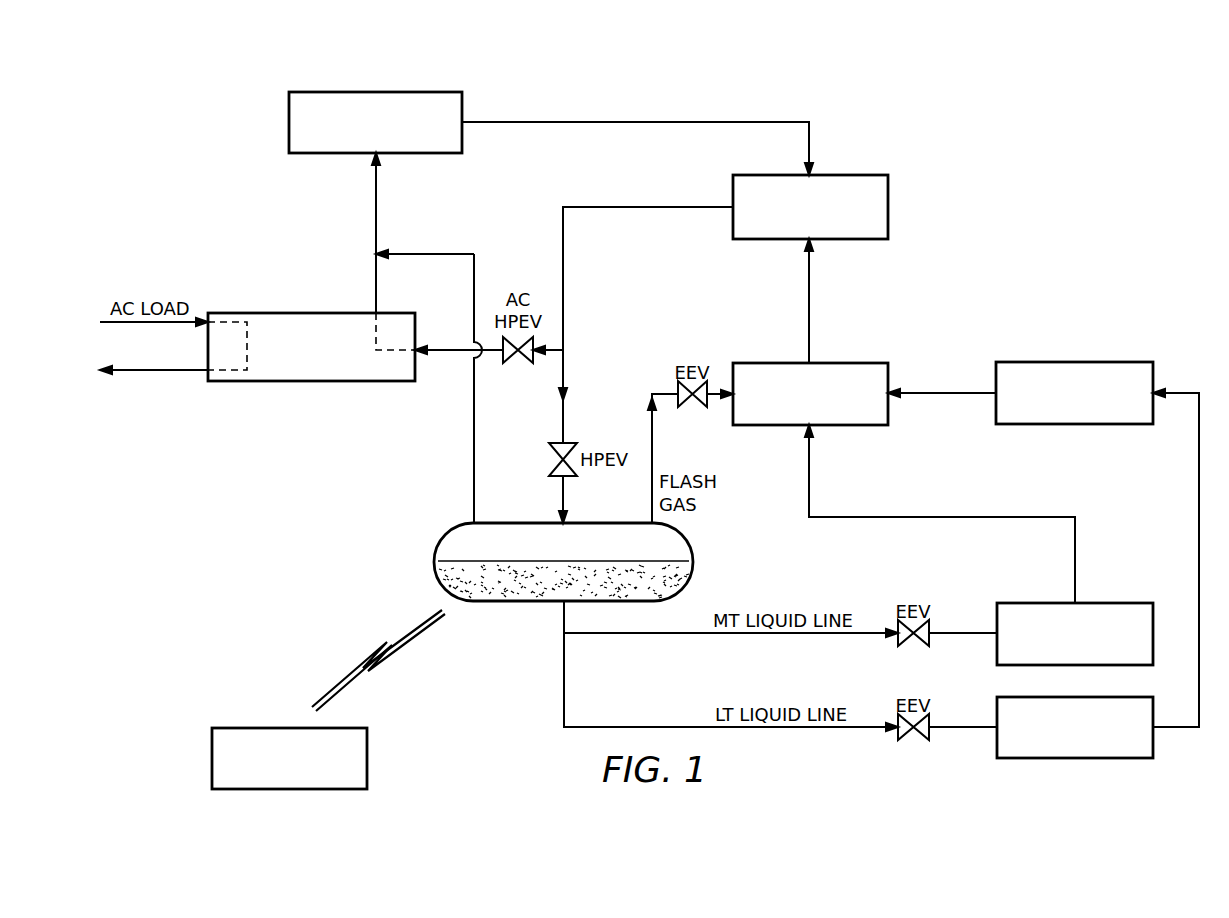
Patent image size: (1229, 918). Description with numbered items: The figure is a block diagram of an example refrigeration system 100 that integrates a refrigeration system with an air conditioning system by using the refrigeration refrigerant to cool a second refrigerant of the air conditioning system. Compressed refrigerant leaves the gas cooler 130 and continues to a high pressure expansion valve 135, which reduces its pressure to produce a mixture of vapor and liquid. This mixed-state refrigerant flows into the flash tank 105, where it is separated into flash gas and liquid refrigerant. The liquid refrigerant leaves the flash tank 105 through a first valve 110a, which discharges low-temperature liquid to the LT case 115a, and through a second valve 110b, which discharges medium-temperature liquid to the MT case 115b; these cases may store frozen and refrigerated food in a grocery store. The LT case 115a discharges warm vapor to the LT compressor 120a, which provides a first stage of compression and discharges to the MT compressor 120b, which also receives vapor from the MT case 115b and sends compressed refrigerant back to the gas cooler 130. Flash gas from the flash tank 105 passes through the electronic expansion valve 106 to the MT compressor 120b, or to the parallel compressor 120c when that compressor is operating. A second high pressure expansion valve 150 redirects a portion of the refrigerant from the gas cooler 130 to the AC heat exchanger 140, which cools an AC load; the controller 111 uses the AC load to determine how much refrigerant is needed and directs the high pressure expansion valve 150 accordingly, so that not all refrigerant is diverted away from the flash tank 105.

The system 100 is at (1068, 72).
The flash tank 105 is at (442, 537).
The electronic expansion valve 106 is at (688, 408).
The first valve 110a is at (916, 740).
The second valve 110b is at (916, 646).
The controller 111 is at (368, 757).
The LT case 115a is at (1096, 758).
The MT case 115b is at (1092, 603).
The LT compressor 120a is at (1094, 362).
The MT compressor 120b is at (846, 363).
The parallel compressor 120c is at (398, 92).
The gas cooler 130 is at (846, 175).
The high pressure expansion valve 135 is at (549, 455).
The AC heat exchanger 140 is at (350, 381).
The high pressure expansion valve 150 is at (515, 364).